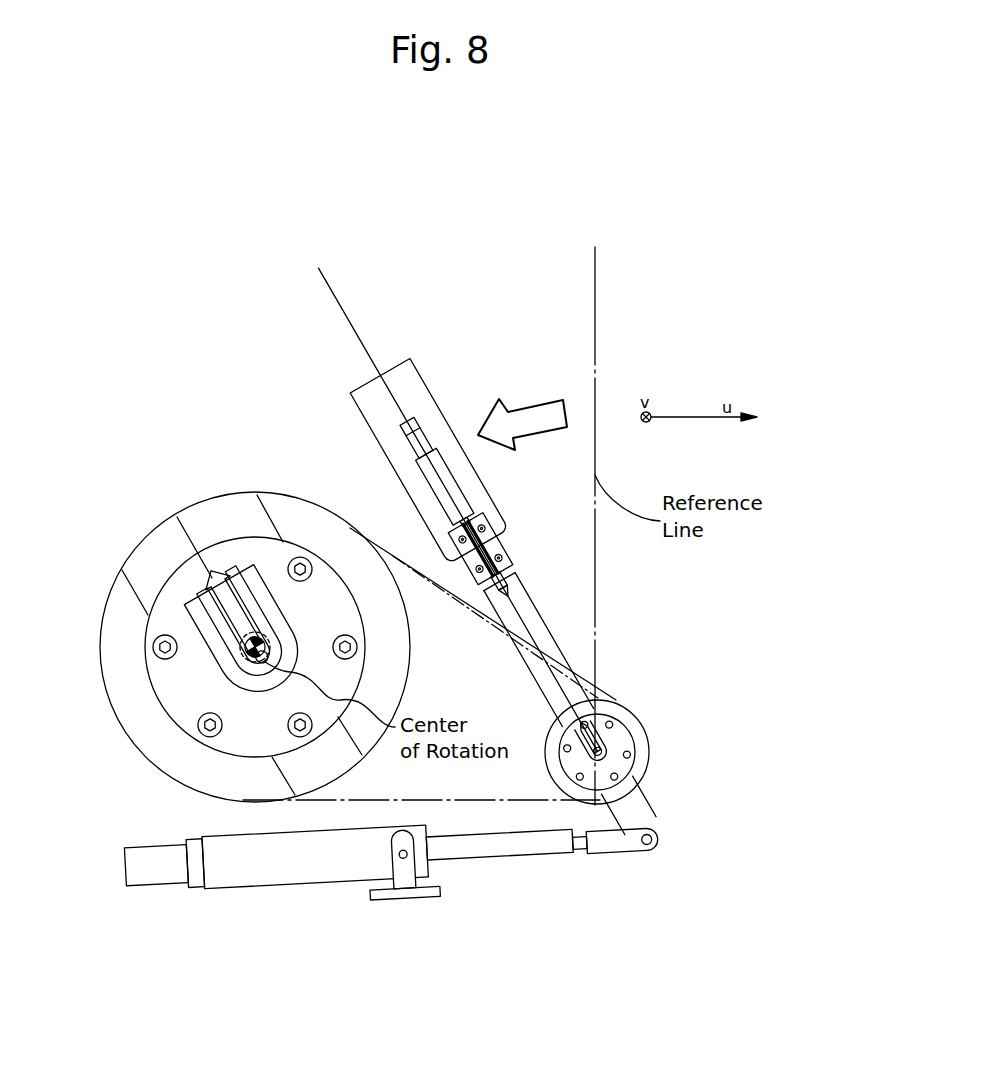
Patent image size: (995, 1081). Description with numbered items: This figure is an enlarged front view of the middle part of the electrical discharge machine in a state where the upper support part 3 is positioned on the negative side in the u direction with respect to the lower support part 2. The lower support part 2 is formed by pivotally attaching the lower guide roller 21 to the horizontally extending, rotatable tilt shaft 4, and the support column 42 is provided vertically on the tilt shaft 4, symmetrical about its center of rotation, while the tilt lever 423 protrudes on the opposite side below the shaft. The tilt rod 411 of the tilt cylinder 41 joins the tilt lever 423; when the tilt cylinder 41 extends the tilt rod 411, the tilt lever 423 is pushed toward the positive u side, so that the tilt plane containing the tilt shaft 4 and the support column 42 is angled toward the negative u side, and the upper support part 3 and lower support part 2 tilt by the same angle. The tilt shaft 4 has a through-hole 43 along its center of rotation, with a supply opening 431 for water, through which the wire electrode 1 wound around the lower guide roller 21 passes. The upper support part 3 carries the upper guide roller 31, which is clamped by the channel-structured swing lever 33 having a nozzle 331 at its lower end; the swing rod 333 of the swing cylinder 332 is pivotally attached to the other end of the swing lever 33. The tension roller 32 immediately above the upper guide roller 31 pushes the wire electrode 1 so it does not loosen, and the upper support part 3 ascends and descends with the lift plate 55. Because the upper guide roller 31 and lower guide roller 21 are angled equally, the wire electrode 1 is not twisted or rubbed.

The wire electrode 1 is at (180, 538).
The lower support part 2 is at (216, 672).
The lower guide roller 21 is at (213, 578).
The upper support part 3 is at (504, 549).
The upper guide roller 31 is at (510, 592).
The tension roller 32 is at (467, 532).
The swing lever 33 is at (516, 566).
The nozzle 331 is at (487, 612).
The swing cylinder 332 is at (425, 435).
The swing rod 333 is at (470, 517).
The tilt shaft 4 is at (152, 688).
The tilt cylinder 41 is at (290, 877).
The tilt rod 411 is at (518, 850).
The support column 42 is at (552, 634).
The tilt lever 423 is at (638, 811).
The through-hole 43 is at (268, 636).
The supply opening 431 is at (257, 676).
The lift plate 55 is at (370, 417).